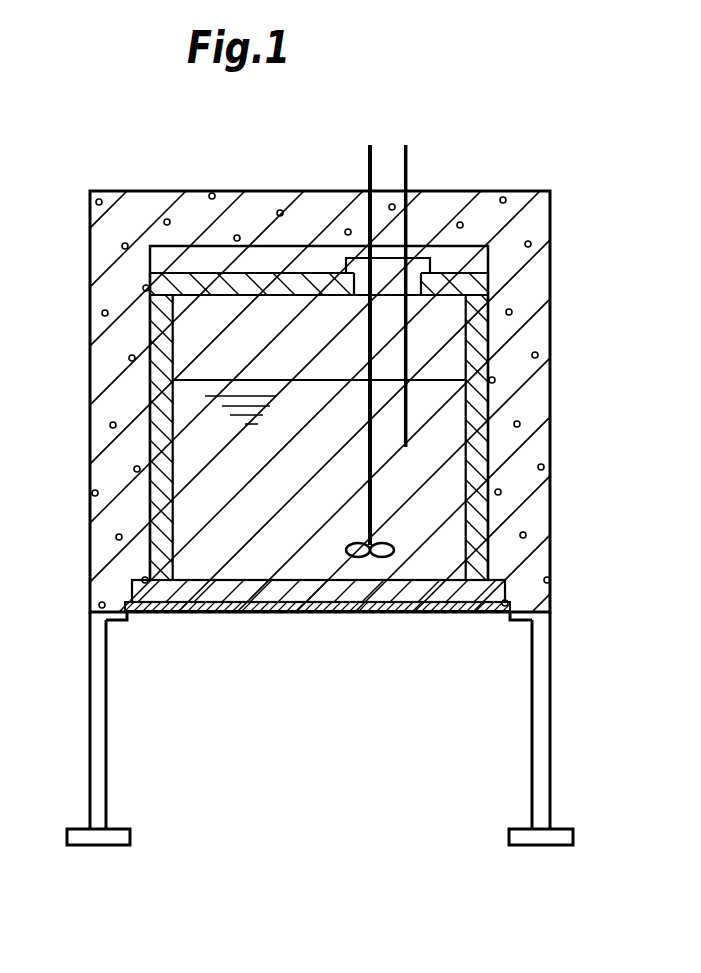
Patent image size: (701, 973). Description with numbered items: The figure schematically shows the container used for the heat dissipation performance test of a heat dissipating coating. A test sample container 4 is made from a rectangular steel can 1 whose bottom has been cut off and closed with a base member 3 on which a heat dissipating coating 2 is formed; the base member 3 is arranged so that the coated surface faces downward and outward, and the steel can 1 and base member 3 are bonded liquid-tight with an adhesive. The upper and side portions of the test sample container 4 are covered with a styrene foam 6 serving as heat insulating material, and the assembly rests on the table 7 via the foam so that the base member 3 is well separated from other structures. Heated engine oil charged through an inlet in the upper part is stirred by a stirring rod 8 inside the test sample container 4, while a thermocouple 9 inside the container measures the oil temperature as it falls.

The rectangular steel can 1 is at (350, 419).
The heat dissipating coating 2 is at (273, 606).
The base member 3 is at (225, 596).
The test sample container 4 is at (140, 512).
The styrene foam 6 is at (533, 400).
The table 7 is at (93, 740).
The stirring rod 8 is at (367, 165).
The thermocouple 9 is at (408, 162).